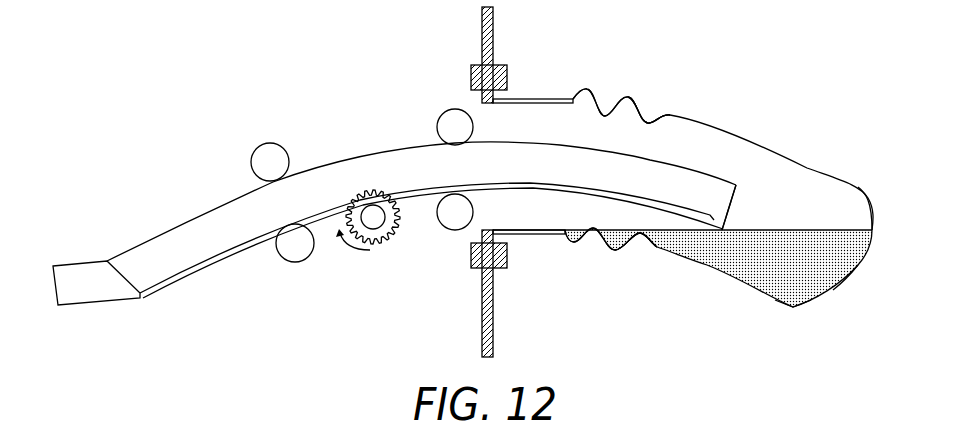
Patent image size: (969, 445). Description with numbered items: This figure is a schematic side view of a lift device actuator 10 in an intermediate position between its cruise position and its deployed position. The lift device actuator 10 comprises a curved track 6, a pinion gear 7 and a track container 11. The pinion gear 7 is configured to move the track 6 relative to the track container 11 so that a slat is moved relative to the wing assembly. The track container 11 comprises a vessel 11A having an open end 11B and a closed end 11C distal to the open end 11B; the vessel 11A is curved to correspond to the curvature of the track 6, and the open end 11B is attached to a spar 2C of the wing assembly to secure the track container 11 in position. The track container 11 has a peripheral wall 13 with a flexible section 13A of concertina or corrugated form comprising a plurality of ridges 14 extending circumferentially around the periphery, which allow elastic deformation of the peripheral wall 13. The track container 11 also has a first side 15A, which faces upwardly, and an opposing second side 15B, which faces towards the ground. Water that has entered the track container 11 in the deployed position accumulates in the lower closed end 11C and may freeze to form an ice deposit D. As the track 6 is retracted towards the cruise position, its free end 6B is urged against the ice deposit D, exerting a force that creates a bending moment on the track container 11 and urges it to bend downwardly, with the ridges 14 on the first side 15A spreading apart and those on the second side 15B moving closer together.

The lift device actuator 10 is at (289, 62).
The curved track 6 is at (375, 162).
The pinion gear 7 is at (380, 241).
The spar 2C is at (482, 15).
The open end 11B is at (487, 117).
The first side 15A is at (575, 98).
The second side 15B is at (565, 235).
The track container 11 is at (825, 149).
The peripheral wall 13 is at (747, 138).
The ridges 14 is at (618, 88).
The flexible section 13A is at (647, 100).
The vessel 11A is at (860, 187).
The closed end 11C is at (850, 288).
The ice deposit D is at (796, 309).
The free end 6B is at (705, 205).